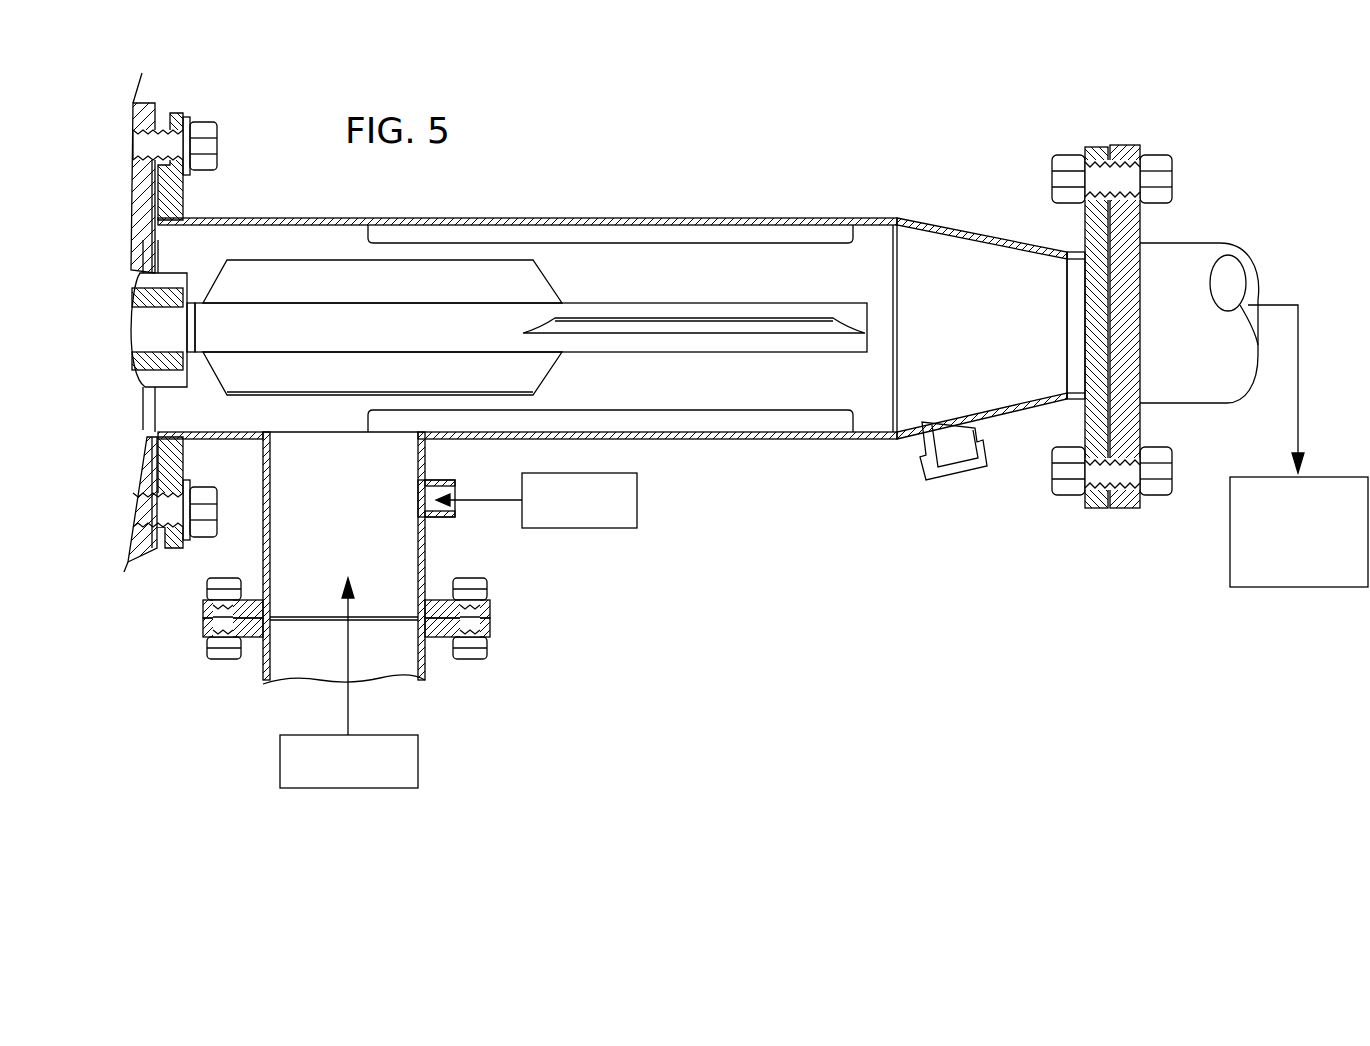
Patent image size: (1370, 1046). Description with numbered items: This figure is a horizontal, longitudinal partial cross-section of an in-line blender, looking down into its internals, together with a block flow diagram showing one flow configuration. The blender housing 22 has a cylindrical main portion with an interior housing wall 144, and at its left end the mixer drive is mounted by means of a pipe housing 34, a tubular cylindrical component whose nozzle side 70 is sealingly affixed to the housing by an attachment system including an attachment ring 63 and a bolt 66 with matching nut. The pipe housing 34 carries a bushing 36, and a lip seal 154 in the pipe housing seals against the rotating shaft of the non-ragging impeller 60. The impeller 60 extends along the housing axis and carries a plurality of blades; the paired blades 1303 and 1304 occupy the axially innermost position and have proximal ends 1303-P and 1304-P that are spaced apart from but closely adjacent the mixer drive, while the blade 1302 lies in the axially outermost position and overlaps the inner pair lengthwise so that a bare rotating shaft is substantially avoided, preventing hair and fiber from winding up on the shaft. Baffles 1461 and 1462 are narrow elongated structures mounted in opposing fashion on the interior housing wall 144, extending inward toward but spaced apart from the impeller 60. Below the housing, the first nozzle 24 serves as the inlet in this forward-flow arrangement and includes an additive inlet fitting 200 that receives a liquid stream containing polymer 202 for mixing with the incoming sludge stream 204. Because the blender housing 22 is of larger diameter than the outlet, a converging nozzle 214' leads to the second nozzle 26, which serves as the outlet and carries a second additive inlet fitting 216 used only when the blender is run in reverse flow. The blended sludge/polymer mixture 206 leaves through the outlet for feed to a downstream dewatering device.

The blender housing 22 is at (805, 218).
The first nozzle 24 is at (430, 540).
The second nozzle 26 is at (1082, 245).
The pipe housing 34 is at (150, 105).
The bushing 36 is at (150, 275).
The non-ragging impeller 60 is at (818, 350).
The attachment ring 63 is at (184, 118).
The bolt 66 is at (210, 150).
The nozzle side 70 is at (152, 455).
The interior housing wall 144 is at (312, 224).
The lip seal 154 is at (136, 330).
The blade 1302 is at (780, 314).
The blade 1303 is at (525, 368).
The blade 1304 is at (503, 272).
The proximal end 1304-P is at (202, 302).
The proximal end 1303-P is at (200, 356).
The baffle 1461 is at (712, 410).
The baffle 1462 is at (692, 238).
The additive inlet fitting 200 is at (445, 480).
The polymer 202 is at (638, 500).
The sludge stream 204 is at (420, 758).
The sludge/polymer mixture 206 is at (1230, 530).
The converging nozzle 214' is at (910, 184).
The additive inlet fitting 216 is at (924, 455).